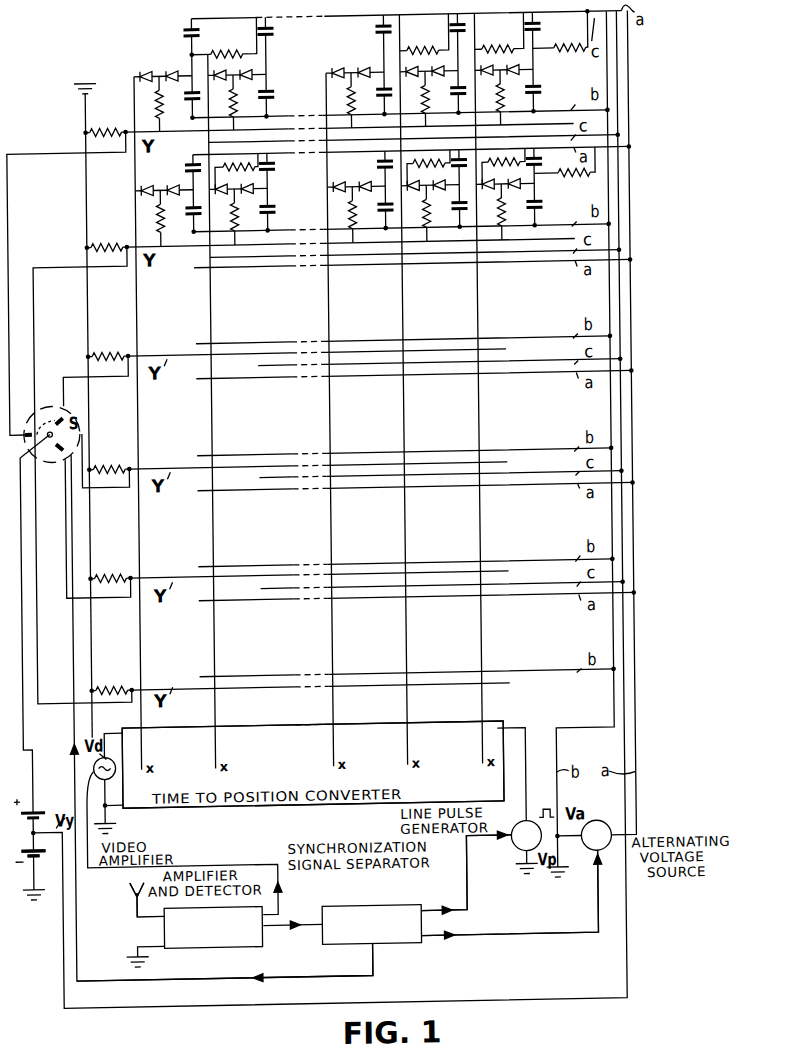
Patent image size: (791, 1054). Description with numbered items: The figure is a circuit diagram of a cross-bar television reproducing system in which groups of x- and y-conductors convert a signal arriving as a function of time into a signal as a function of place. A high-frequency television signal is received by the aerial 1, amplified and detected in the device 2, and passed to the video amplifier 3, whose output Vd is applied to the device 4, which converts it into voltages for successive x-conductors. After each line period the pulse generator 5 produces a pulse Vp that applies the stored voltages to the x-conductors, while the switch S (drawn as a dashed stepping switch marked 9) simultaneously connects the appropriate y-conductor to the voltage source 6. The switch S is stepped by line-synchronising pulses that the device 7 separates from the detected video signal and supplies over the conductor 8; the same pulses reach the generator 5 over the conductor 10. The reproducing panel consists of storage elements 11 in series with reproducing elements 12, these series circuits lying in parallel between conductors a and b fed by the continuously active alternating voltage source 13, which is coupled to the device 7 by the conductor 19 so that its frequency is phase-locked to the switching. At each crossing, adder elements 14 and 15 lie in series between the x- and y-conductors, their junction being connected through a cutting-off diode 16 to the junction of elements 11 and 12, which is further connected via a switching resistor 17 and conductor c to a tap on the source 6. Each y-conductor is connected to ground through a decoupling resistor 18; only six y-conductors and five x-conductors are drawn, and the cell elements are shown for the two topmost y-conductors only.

The aerial 1 is at (128, 893).
The amplifying and detecting device 2 is at (226, 904).
The video amplifier 3 is at (106, 752).
The converting device 4 is at (394, 805).
The pulse generator 5 is at (509, 830).
The voltage source 6 is at (38, 848).
The synchronizing signal separating device 7 is at (375, 905).
The conductor 8 is at (301, 975).
The switch 9 is at (63, 412).
The conductor 10 is at (463, 866).
The storage element 11 is at (366, 185).
The reproducing element 12 is at (354, 95).
The alternating voltage source 13 is at (609, 821).
The adder element 14 is at (314, 132).
The adder element 15 is at (329, 180).
The cutting-off diode 16 is at (344, 131).
The switching resistor 17 is at (394, 110).
The decoupling resistor 18 is at (108, 395).
The conductor 19 is at (537, 936).